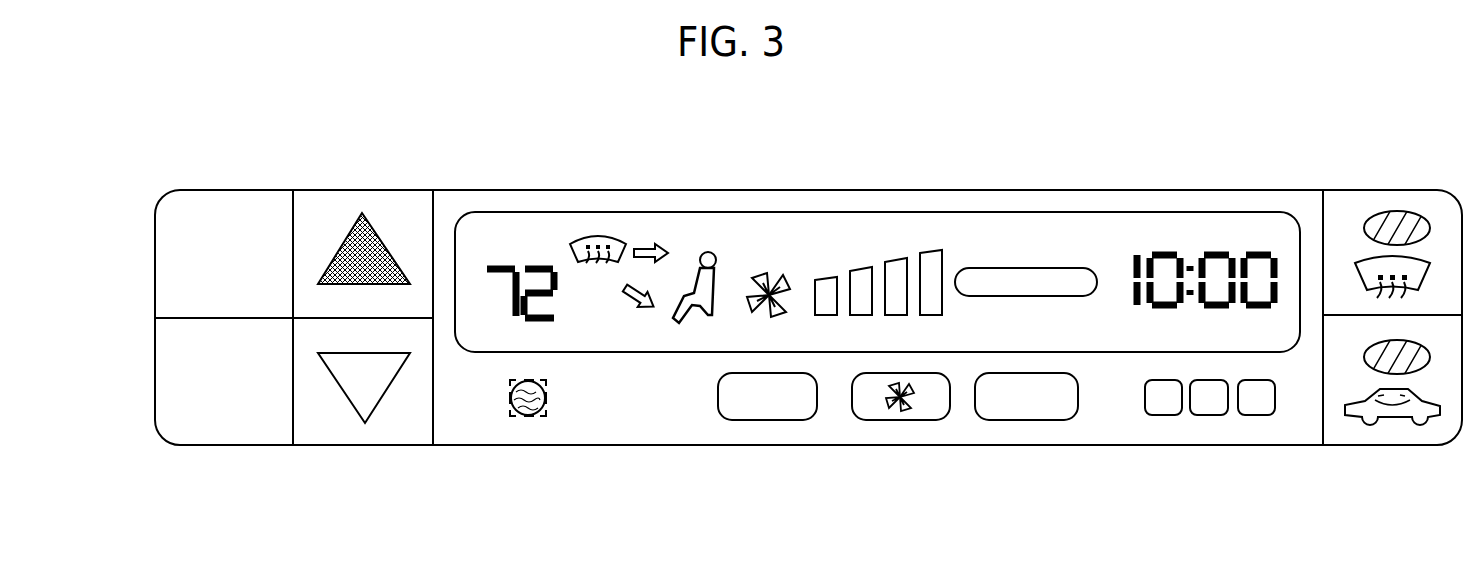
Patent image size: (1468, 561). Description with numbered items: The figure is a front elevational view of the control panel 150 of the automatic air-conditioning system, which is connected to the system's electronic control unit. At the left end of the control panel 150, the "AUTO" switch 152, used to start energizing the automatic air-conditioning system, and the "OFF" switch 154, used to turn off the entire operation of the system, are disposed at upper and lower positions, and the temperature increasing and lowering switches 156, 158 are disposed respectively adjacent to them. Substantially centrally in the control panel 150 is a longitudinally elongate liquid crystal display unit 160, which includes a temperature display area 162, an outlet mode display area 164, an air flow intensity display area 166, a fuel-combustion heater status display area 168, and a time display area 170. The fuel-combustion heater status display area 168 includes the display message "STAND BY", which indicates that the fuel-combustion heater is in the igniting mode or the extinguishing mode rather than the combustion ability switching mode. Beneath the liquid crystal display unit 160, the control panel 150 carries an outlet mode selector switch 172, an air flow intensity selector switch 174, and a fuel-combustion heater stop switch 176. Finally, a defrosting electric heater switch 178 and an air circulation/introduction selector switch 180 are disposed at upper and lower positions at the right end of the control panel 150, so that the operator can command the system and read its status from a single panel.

The control panel 150 is at (698, 133).
The "AUTO" switch 152 is at (208, 196).
The "OFF" switch 154 is at (235, 435).
The temperature increasing switch 156 is at (350, 198).
The temperature lowering switch 158 is at (400, 420).
The liquid crystal display unit 160 is at (925, 222).
The temperature display area 162 is at (528, 218).
The outlet mode display area 164 is at (636, 230).
The air flow intensity display area 166 is at (835, 245).
The fuel-combustion heater status display area 168 is at (1093, 240).
The time display area 170 is at (1205, 220).
The outlet mode selector switch 172 is at (752, 418).
The air flow intensity selector switch 174 is at (925, 418).
The fuel-combustion heater stop switch 176 is at (1055, 418).
The defrosting electric heater switch 178 is at (1350, 203).
The air circulation/introduction selector switch 180 is at (1350, 432).